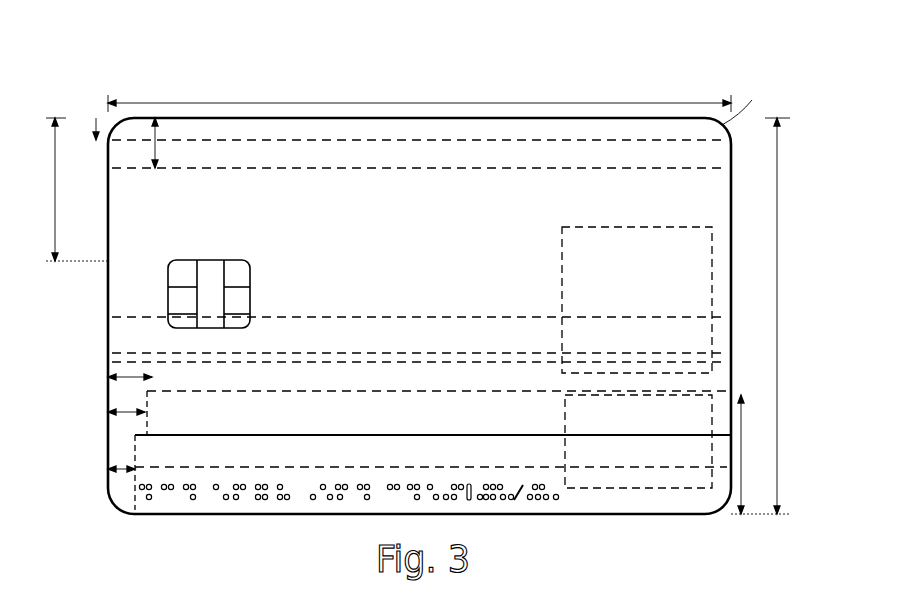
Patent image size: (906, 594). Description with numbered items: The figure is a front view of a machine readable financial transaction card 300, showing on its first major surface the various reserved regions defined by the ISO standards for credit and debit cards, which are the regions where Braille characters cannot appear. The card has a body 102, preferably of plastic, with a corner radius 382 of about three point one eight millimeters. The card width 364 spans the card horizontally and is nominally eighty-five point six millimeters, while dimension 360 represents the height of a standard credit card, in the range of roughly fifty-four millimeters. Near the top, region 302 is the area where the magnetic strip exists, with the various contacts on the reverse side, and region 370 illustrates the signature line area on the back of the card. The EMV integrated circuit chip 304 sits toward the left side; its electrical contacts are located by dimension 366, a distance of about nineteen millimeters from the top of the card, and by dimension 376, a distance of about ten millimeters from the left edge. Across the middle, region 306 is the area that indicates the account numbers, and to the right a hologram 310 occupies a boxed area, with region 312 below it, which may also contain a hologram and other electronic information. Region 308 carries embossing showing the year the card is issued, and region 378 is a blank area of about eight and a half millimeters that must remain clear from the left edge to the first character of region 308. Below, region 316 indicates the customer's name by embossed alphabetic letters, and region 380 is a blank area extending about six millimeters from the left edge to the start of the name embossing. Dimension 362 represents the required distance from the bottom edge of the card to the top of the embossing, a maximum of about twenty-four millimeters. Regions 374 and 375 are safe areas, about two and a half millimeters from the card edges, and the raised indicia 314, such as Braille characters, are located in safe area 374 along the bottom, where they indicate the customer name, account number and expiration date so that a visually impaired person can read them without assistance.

The financial transaction card 300 is at (589, 57).
The body 102 is at (124, 292).
The magnetic strip region 302 is at (222, 145).
The EMV integrated circuit chip 304 is at (218, 268).
The account number region 306 is at (456, 317).
The issue year embossing region 308 is at (300, 412).
The hologram 310 is at (562, 252).
The hologram and electronic information region 312 is at (565, 430).
The raised indicia 314 is at (196, 500).
The customer name region 316 is at (490, 452).
The card height dimension 360 is at (777, 232).
The embossing distance dimension 362 is at (741, 395).
The card width 364 is at (418, 102).
The contact distance from top dimension 366 is at (57, 185).
The signature line area 370 is at (163, 145).
The safe area 374 is at (160, 503).
The safe area 375 is at (752, 100).
The contact distance from left edge dimension 376 is at (113, 392).
The blank region before year embossing 378 is at (128, 426).
The blank region before name embossing 380 is at (122, 478).
The corner radius 382 is at (94, 125).